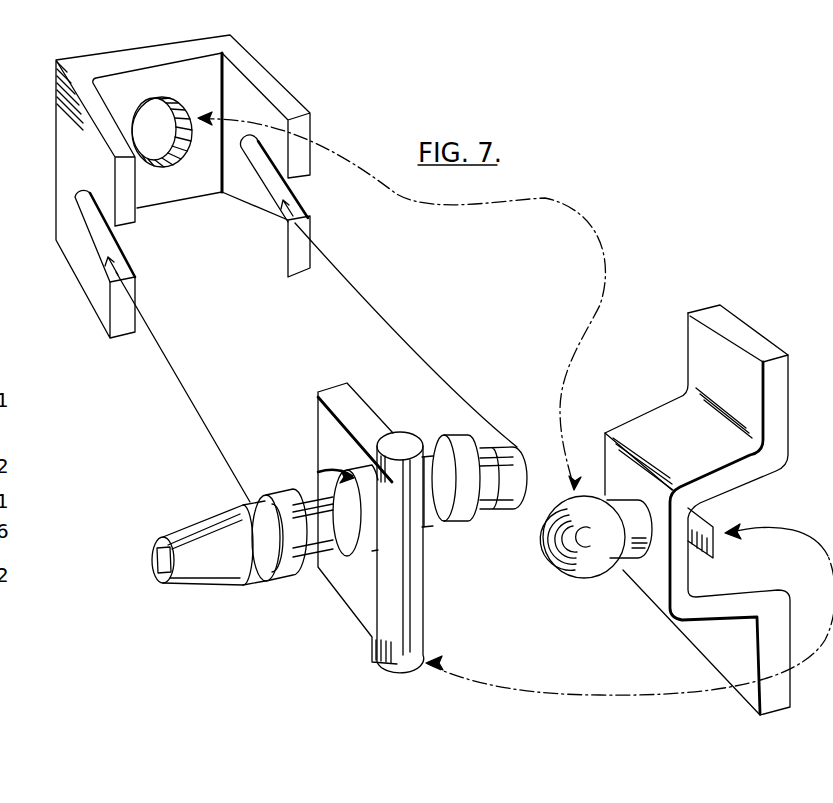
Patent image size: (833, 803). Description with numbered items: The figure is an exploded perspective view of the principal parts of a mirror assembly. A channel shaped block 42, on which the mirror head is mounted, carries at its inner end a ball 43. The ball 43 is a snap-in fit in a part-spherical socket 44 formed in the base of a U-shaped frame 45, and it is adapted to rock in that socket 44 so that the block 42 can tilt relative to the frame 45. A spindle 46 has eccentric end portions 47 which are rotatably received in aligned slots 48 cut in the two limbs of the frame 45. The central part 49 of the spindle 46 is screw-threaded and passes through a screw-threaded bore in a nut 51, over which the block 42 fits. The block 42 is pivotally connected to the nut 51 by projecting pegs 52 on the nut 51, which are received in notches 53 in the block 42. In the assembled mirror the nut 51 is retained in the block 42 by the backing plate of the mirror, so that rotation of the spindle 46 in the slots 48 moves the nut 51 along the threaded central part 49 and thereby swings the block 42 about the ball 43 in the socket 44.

The channel shaped block 42 is at (657, 427).
The ball 43 is at (595, 560).
The part-spherical socket 44 is at (157, 116).
The U-shaped frame 45 is at (256, 102).
The spindle 46 is at (322, 527).
The eccentric end portions 47 is at (266, 552).
The slots 48 is at (100, 236).
The central part 49 is at (320, 470).
The nut 51 is at (387, 586).
The pegs 52 is at (403, 444).
The notches 53 is at (716, 548).